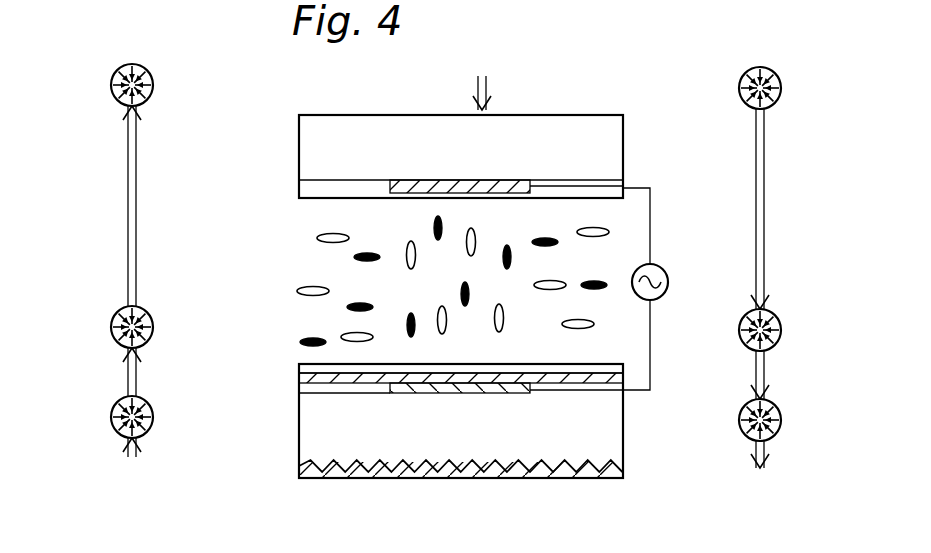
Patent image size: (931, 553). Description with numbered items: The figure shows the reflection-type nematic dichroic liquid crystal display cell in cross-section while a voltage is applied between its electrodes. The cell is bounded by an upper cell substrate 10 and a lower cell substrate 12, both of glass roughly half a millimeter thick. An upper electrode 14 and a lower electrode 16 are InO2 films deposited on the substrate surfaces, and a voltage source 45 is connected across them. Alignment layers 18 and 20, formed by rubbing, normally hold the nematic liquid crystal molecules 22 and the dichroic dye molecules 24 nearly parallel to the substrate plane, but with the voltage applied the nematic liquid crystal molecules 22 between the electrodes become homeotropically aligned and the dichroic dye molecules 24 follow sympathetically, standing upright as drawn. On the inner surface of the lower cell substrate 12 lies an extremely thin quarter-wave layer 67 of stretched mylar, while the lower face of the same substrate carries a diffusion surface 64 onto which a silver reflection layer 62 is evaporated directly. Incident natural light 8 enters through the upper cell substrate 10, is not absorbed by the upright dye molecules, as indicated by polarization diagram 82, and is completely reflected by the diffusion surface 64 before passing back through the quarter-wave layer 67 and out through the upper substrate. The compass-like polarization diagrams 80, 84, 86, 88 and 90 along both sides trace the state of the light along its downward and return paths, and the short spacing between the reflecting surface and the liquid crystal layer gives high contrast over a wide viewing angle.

The incident natural light 8 is at (482, 79).
The upper cell substrate 10 is at (304, 144).
The lower cell substrate 12 is at (308, 447).
The upper electrode 14 is at (392, 196).
The lower electrode 16 is at (390, 395).
The alignment layer 18 is at (304, 188).
The alignment layer 20 is at (302, 368).
The nematic liquid crystal molecules 22 is at (318, 238).
The dichroic dye molecules 24 is at (342, 255).
The voltage source 45 is at (668, 282).
The reflection layer 62 is at (315, 472).
The diffusion surface 64 is at (577, 465).
The quarter-wave layer 67 is at (302, 376).
The unpolarized incident light 80 is at (781, 82).
The polarization diagram 82 is at (781, 324).
The light after passing through cell 84 is at (781, 410).
The unpolarized light 86 is at (111, 401).
The light entering cell 88 is at (111, 311).
The emerging light 90 is at (111, 78).